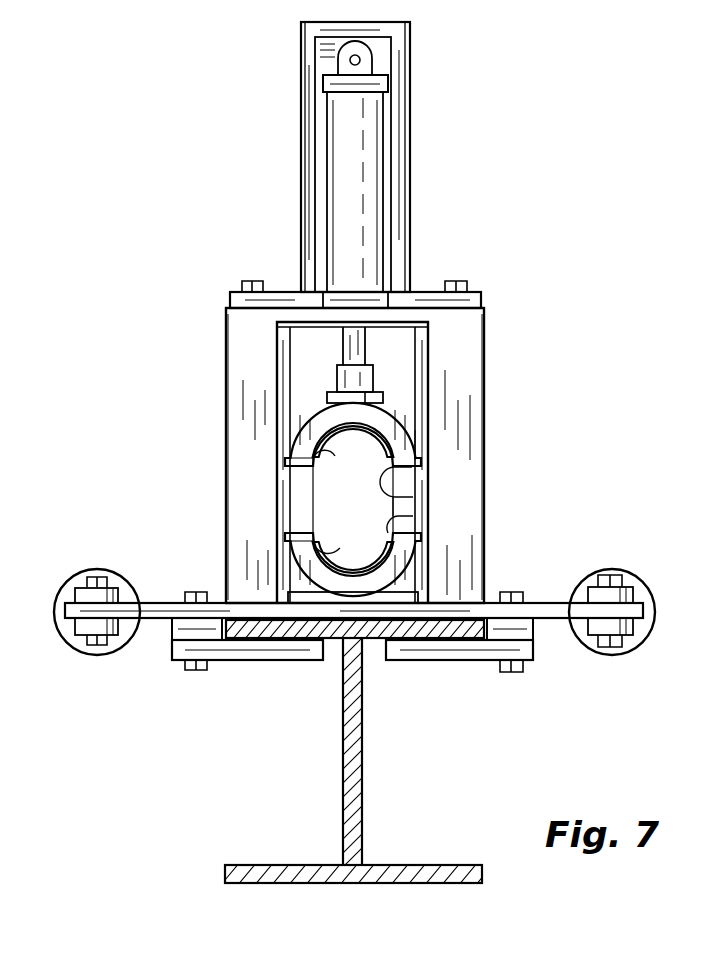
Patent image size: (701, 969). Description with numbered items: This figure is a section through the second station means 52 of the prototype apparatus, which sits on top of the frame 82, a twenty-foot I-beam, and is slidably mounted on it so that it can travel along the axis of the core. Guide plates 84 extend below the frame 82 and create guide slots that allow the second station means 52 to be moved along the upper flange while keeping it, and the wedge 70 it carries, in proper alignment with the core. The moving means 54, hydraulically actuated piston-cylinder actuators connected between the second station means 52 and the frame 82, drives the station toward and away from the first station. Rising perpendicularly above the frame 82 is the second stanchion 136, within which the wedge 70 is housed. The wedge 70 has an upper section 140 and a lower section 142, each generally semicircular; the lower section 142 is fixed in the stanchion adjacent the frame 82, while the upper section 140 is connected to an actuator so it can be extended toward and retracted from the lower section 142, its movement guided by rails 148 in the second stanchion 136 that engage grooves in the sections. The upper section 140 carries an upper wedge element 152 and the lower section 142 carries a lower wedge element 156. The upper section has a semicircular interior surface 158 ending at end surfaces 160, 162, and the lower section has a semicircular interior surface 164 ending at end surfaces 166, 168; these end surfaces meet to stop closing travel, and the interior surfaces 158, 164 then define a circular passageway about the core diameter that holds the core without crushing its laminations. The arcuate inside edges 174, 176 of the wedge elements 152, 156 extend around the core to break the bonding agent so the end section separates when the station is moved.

The second station means 52 is at (450, 146).
The moving means 54 is at (76, 572).
The wedge 70 is at (370, 478).
The frame 82 is at (355, 778).
The guide plates 84 is at (258, 650).
The second stanchion 136 is at (305, 240).
The upper section 140 is at (310, 420).
The lower section 142 is at (295, 547).
The rails 148 is at (280, 345).
The upper wedge element 152 is at (300, 447).
The lower wedge element 156 is at (338, 556).
The interior surface 158 is at (400, 521).
The end surface 160 is at (312, 457).
The end surface 162 is at (408, 478).
The interior surface 164 is at (425, 512).
The end surface 166 is at (298, 533).
The end surface 168 is at (405, 530).
The arcuate inside edge 174 is at (373, 437).
The arcuate inside edge 176 is at (375, 563).